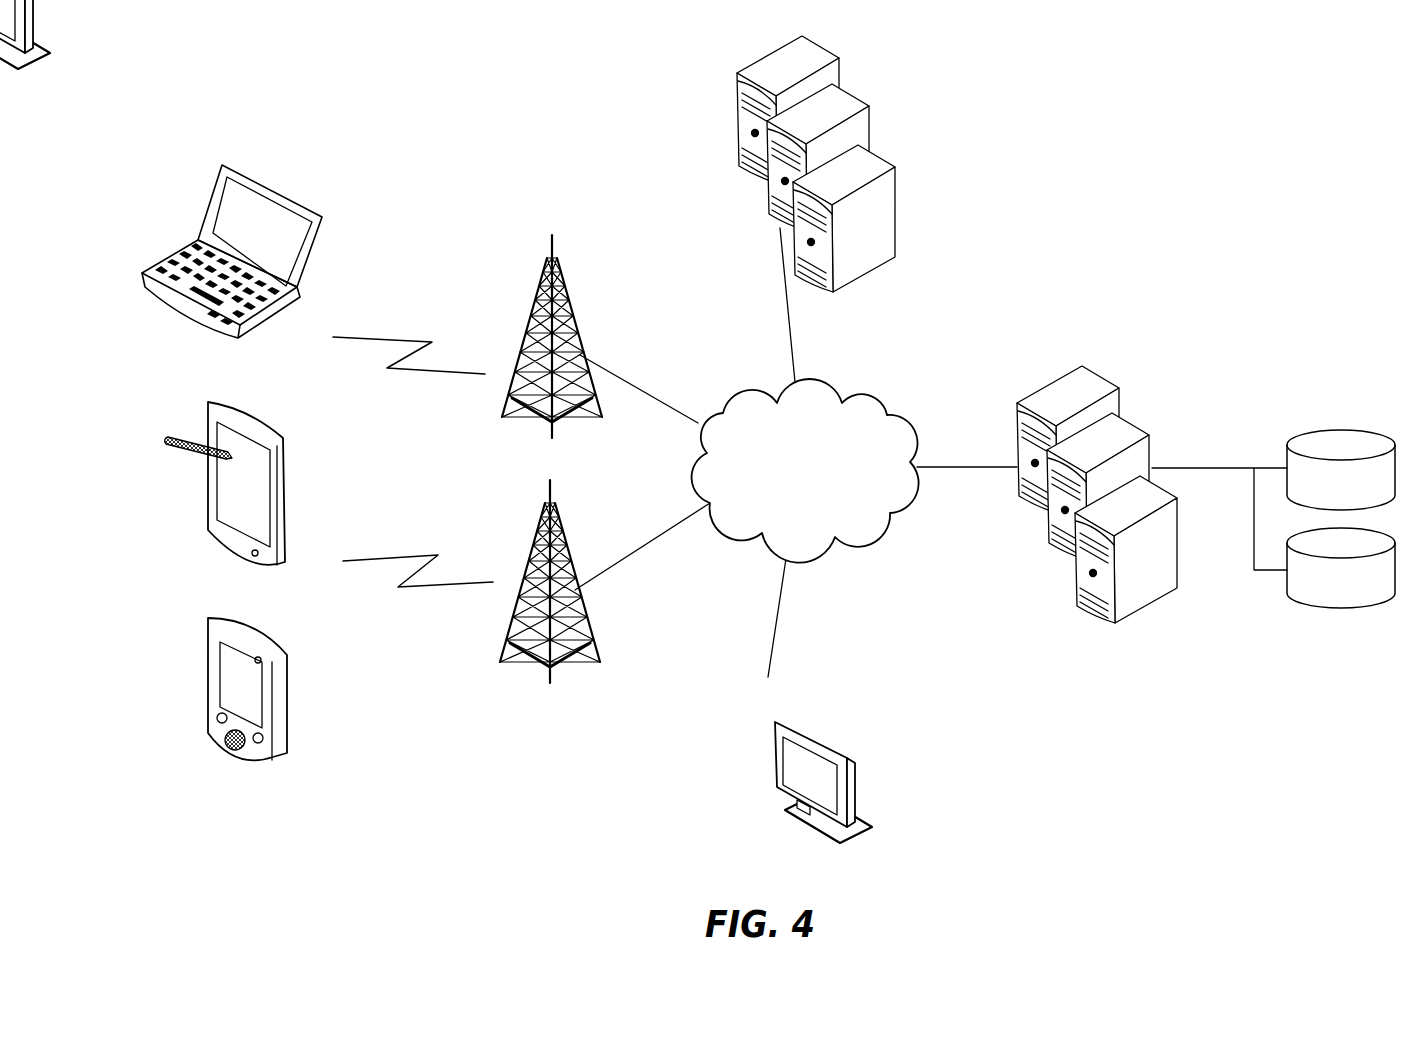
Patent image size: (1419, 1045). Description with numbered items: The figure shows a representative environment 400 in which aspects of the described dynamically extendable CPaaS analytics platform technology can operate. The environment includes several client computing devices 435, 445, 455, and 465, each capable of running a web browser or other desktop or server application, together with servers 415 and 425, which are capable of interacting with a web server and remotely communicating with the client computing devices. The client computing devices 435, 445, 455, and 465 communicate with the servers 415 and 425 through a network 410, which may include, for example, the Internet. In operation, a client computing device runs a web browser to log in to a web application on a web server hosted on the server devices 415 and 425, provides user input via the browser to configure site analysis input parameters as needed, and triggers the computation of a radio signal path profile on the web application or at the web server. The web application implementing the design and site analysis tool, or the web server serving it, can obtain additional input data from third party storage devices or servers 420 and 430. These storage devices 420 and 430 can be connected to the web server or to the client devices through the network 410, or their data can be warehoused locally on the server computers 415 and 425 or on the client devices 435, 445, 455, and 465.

The representative environment 400 is at (1112, 185).
The network 410 is at (870, 392).
The server 415 is at (860, 98).
The third party storage device or server 420 is at (1343, 428).
The server 425 is at (1142, 427).
The third party storage device or server 430 is at (1342, 607).
The client computing device 435 is at (208, 192).
The client computing device 445 is at (210, 408).
The client computing device 455 is at (210, 643).
The client computing device 465 is at (822, 728).